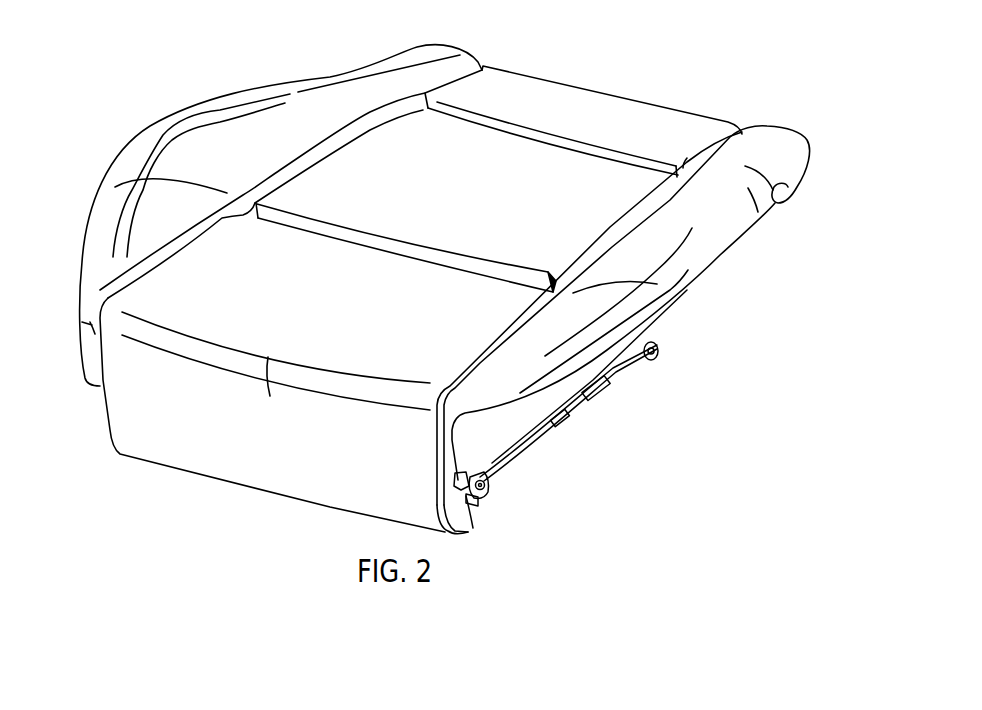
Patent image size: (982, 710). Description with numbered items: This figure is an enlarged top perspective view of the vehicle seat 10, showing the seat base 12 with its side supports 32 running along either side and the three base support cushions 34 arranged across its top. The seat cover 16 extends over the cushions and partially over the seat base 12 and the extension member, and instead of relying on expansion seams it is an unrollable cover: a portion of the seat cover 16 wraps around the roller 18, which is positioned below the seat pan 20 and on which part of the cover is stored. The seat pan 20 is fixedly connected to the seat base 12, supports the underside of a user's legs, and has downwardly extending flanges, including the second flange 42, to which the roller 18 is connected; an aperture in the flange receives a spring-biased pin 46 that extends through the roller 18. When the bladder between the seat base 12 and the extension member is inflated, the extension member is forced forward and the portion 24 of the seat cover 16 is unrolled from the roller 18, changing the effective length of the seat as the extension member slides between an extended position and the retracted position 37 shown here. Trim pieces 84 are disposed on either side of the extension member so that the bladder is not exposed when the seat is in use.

The vehicle seat 10 is at (135, 88).
The seat base 12 is at (606, 392).
The seat cover 16 is at (137, 293).
The roller 18 is at (474, 528).
The seat pan 20 is at (490, 485).
The portion of the seat cover 24 is at (140, 418).
The side supports 32 is at (138, 147).
The base support cushion 34 is at (577, 115).
The retracted position 37 is at (152, 488).
The second flange 42 is at (490, 472).
The spring-biased pin 46 is at (490, 490).
The trim pieces 84 is at (462, 481).